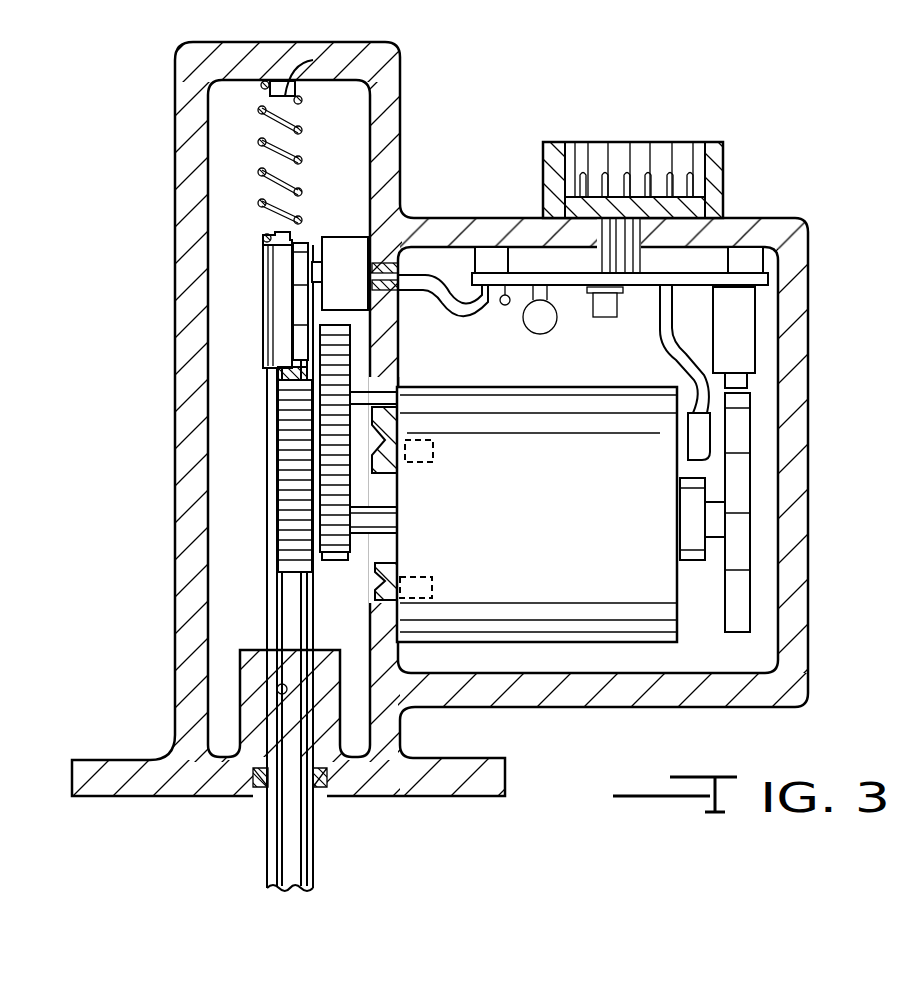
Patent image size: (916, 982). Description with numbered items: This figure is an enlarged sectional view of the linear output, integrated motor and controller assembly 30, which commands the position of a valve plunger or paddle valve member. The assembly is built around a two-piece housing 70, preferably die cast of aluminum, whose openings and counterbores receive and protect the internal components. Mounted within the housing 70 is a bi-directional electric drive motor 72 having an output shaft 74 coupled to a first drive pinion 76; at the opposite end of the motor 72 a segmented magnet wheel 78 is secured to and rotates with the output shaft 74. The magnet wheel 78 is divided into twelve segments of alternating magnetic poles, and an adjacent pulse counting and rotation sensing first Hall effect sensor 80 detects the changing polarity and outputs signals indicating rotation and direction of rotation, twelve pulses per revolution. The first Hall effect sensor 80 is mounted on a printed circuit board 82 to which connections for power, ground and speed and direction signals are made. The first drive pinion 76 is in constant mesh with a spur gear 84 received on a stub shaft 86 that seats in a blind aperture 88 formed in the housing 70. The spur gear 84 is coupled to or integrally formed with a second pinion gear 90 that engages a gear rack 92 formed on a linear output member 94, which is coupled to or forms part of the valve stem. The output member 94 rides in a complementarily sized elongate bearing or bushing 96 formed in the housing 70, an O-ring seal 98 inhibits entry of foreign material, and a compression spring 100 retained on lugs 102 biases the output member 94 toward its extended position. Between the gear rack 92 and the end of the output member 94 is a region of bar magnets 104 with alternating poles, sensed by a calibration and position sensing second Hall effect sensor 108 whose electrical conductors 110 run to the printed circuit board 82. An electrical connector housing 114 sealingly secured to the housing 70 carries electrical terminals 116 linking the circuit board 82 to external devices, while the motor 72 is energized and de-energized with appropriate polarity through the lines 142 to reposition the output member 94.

The integrated motor and controller assembly 30 is at (738, 110).
The two-piece housing 70 is at (797, 418).
The bi-directional electric drive motor 72 is at (560, 540).
The output shaft 74 is at (382, 520).
The first drive pinion 76 is at (334, 560).
The segmented magnet wheel 78 is at (745, 598).
The first Hall effect sensor 80 is at (742, 381).
The printed circuit board 82 is at (702, 277).
The spur gear 84 is at (352, 345).
The stub shaft 86 is at (366, 398).
The blind aperture 88 is at (408, 434).
The second pinion gear 90 is at (290, 372).
The gear rack 92 is at (278, 480).
The linear output member 94 is at (280, 603).
The elongate bearing or bushing 96 is at (277, 690).
The O-ring seal 98 is at (327, 778).
The compression spring 100 is at (302, 128).
The lugs 102 is at (313, 60).
The bar magnets 104 is at (300, 300).
The second Hall effect sensor 108 is at (314, 262).
The electrical conductors 110 is at (428, 272).
The electrical connector housing 114 is at (718, 162).
The electrical terminals 116 is at (673, 163).
The lines 142 is at (658, 340).